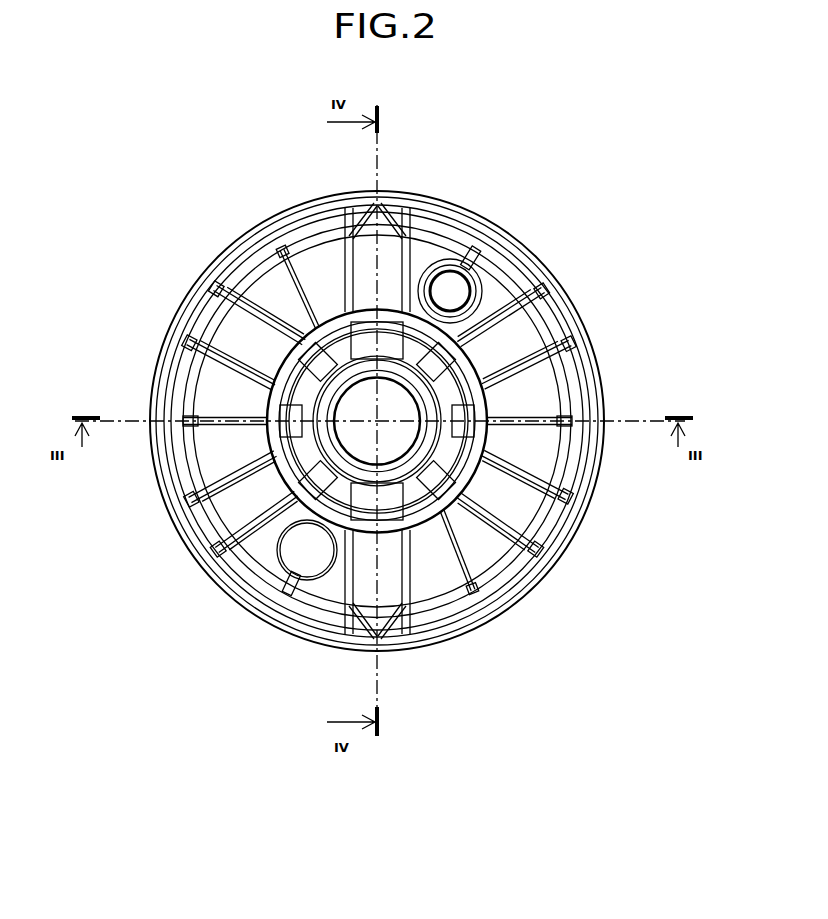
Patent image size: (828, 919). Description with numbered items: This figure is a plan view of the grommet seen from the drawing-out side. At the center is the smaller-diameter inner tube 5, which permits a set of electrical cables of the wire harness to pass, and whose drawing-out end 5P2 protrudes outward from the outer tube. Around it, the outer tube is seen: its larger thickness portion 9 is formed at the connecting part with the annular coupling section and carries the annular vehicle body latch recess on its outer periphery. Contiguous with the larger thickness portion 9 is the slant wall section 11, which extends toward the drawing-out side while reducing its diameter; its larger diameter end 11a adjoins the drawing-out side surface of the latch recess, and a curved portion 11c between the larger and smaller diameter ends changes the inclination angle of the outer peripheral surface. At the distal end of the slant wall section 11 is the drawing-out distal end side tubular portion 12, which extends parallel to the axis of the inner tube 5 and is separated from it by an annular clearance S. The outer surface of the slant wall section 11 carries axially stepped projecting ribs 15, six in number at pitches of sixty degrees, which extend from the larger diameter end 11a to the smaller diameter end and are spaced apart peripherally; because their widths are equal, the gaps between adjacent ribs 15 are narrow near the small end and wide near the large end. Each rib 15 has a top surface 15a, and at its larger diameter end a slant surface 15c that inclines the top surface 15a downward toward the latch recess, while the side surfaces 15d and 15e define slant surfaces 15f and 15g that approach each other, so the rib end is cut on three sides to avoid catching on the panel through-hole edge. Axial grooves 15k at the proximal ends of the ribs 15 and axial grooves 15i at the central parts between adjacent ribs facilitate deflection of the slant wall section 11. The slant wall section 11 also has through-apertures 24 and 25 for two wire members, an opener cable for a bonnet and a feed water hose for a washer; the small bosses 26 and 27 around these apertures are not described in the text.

The inner tube 5 is at (230, 393).
The larger thickness portion 9 is at (560, 265).
The slant wall section 11 is at (525, 258).
The larger diameter end 11a is at (555, 290).
The curved portion 11c is at (497, 285).
The drawing-out distal end side tubular portion 12 is at (478, 598).
The projecting ribs 15 is at (545, 555).
The top surface 15a is at (455, 258).
The slant surface 15c is at (345, 215).
The side surface 15d is at (378, 277).
The side surface 15e is at (280, 248).
The slant surface 15f is at (397, 206).
The slant surface 15g is at (327, 205).
The axial groove 15i is at (550, 433).
The axial groove 15k is at (545, 340).
The through-aperture 24 is at (513, 320).
The through-aperture 25 is at (290, 548).
The boss hole 26 is at (472, 265).
The boss hole 27 is at (307, 583).
The drawing-out end 5P2 is at (485, 545).
The annular clearance S is at (415, 520).